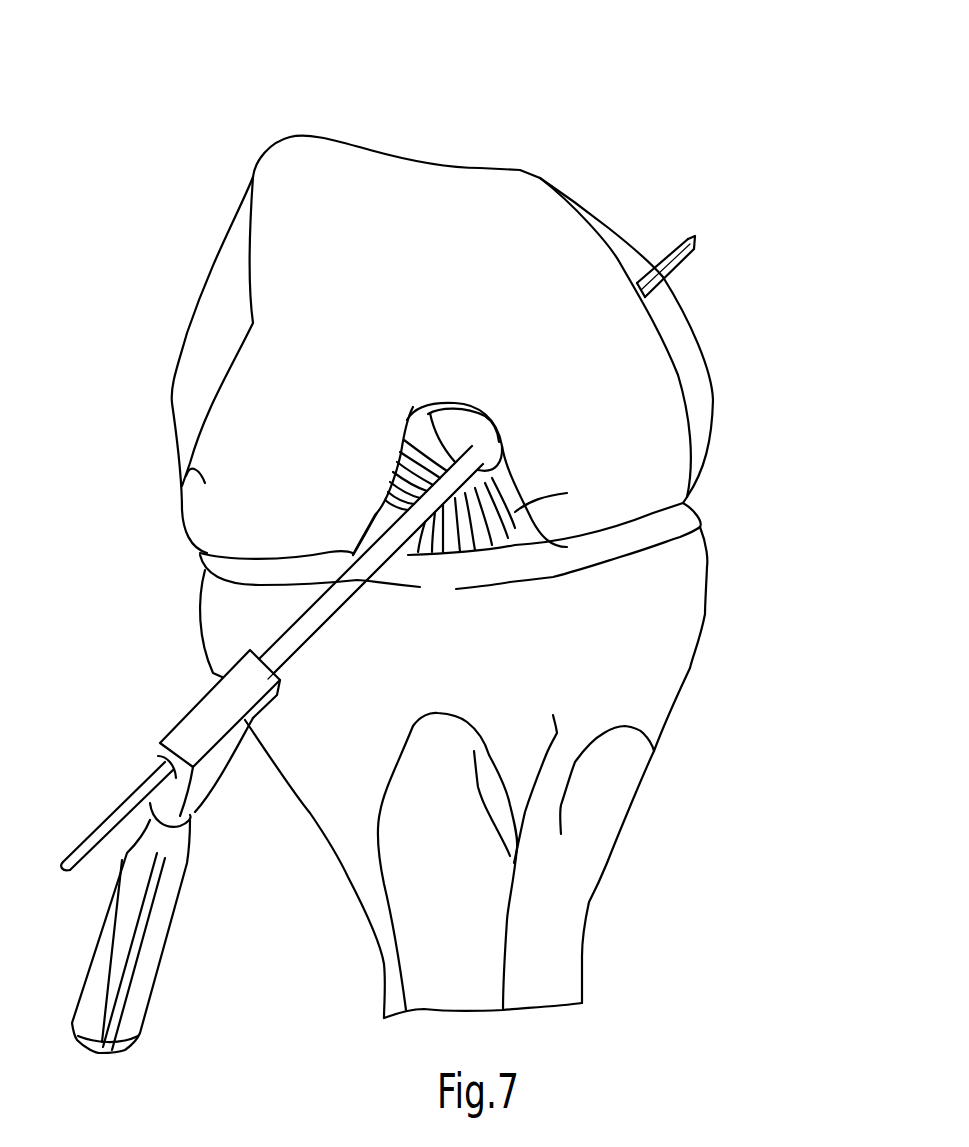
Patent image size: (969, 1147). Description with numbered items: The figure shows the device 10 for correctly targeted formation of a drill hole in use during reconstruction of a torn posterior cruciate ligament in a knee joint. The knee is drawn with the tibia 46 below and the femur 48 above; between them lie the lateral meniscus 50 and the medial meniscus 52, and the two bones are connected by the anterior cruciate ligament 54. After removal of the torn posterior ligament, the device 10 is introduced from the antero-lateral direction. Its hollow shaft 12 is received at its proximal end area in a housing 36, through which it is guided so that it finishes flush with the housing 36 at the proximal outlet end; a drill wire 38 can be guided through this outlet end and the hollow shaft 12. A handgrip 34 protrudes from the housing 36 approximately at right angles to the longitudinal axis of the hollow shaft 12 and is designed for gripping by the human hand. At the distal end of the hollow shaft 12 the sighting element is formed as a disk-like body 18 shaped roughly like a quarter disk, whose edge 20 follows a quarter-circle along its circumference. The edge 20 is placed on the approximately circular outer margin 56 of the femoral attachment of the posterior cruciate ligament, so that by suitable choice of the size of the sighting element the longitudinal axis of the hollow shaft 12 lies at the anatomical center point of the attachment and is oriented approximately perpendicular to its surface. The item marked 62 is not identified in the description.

The device 10 is at (150, 543).
The hollow shaft 12 is at (313, 622).
The disk-like body 18 is at (470, 441).
The edge 20 is at (487, 411).
The handgrip 34 is at (122, 955).
The housing 36 is at (208, 730).
The drill wire 38 is at (122, 803).
The tibia 46 is at (582, 695).
The femur 48 is at (318, 297).
The lateral meniscus 50 is at (270, 573).
The medial meniscus 52 is at (577, 552).
The anterior cruciate ligament 54 is at (520, 500).
The outer margin 56 is at (465, 397).
The targeting device 62 is at (750, 190).